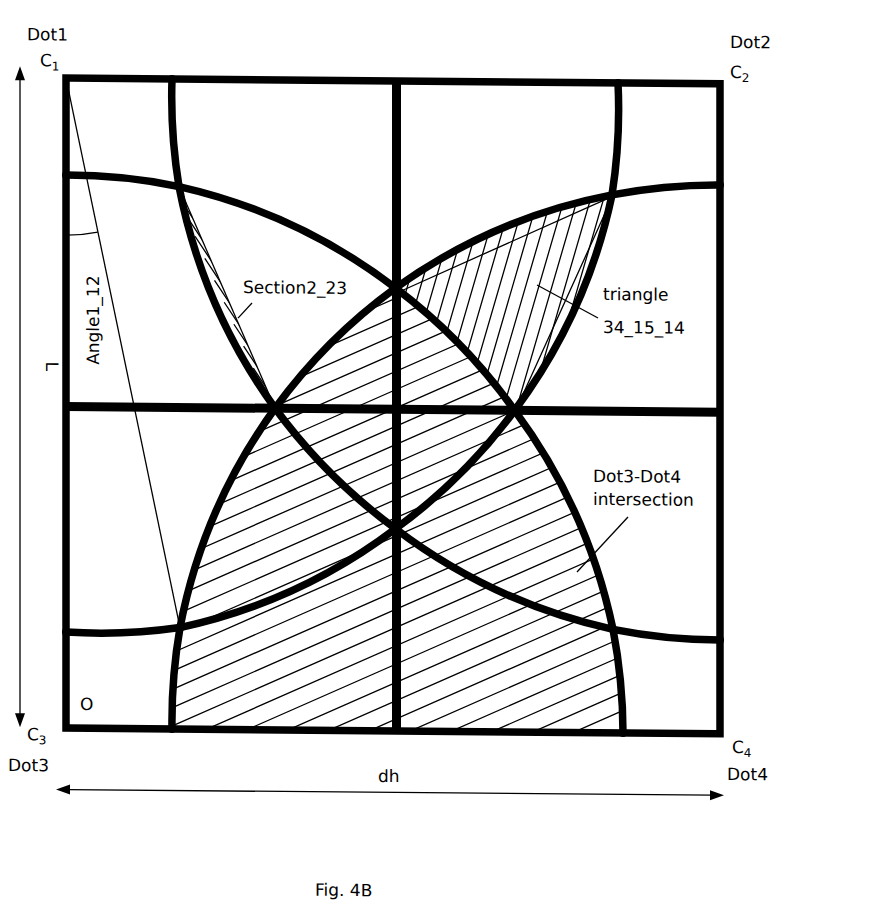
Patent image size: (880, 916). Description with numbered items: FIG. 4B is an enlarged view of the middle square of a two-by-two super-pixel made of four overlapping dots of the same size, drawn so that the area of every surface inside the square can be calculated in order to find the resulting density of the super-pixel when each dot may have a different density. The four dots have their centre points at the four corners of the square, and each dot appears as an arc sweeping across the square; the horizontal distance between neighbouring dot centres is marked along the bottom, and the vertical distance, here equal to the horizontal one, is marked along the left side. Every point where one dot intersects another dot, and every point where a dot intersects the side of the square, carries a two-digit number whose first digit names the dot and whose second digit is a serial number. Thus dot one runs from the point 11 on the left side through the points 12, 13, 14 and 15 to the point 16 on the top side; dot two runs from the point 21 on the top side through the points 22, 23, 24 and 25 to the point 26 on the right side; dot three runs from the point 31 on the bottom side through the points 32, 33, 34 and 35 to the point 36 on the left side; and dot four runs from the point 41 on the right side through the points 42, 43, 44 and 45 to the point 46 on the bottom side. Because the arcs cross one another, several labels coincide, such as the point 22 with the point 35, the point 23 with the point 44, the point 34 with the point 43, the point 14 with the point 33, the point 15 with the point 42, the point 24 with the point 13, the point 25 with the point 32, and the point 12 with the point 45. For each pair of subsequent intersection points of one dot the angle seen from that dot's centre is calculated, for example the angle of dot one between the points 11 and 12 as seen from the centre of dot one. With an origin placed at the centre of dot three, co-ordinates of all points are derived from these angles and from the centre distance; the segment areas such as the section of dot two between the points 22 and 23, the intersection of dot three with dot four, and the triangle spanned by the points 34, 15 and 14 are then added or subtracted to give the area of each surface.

The point of intersection 11 is at (48, 629).
The point of intersection 12 is at (216, 637).
The point of intersection 13 is at (434, 532).
The point of intersection 14 is at (556, 423).
The point of intersection 15 is at (644, 209).
The point of intersection 16 is at (624, 69).
The point of intersection 21 is at (169, 61).
The point of intersection 22 is at (213, 176).
The point of intersection 23 is at (233, 420).
The point of intersection 24 is at (434, 532).
The point of intersection 25 is at (643, 619).
The point of intersection 26 is at (735, 637).
The point of intersection 31 is at (638, 720).
The point of intersection 32 is at (643, 619).
The point of intersection 33 is at (556, 423).
The point of intersection 34 is at (363, 257).
The point of intersection 35 is at (213, 176).
The point of intersection 36 is at (48, 174).
The point of intersection 41 is at (738, 184).
The point of intersection 42 is at (644, 209).
The point of intersection 43 is at (363, 257).
The point of intersection 44 is at (233, 420).
The point of intersection 45 is at (216, 637).
The point of intersection 46 is at (166, 747).